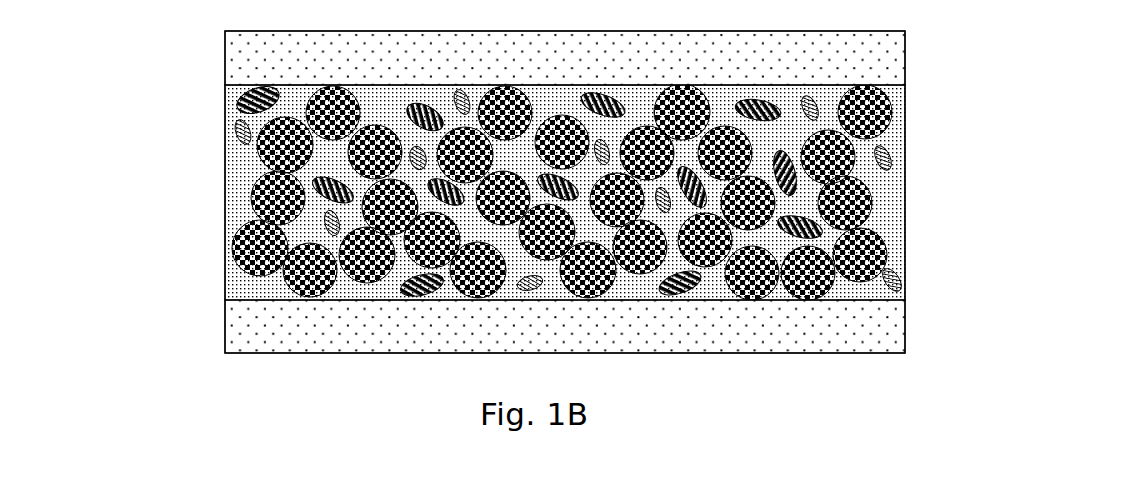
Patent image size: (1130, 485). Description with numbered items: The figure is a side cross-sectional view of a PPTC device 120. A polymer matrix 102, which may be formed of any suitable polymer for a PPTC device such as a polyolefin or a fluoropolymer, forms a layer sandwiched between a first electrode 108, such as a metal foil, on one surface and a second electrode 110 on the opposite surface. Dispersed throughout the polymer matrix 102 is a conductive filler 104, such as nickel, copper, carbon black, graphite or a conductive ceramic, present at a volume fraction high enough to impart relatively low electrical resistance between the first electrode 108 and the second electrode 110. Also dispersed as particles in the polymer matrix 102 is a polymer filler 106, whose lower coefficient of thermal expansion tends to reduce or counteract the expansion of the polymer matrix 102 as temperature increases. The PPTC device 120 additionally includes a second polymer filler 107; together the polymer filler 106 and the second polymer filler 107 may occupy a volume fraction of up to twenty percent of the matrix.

The PPTC device 120 is at (163, 90).
The polymer matrix 102 is at (227, 218).
The conductive filler 104 is at (870, 188).
The polymer filler 106 is at (233, 96).
The second polymer filler 107 is at (237, 143).
The first electrode 108 is at (890, 62).
The second electrode 110 is at (905, 322).